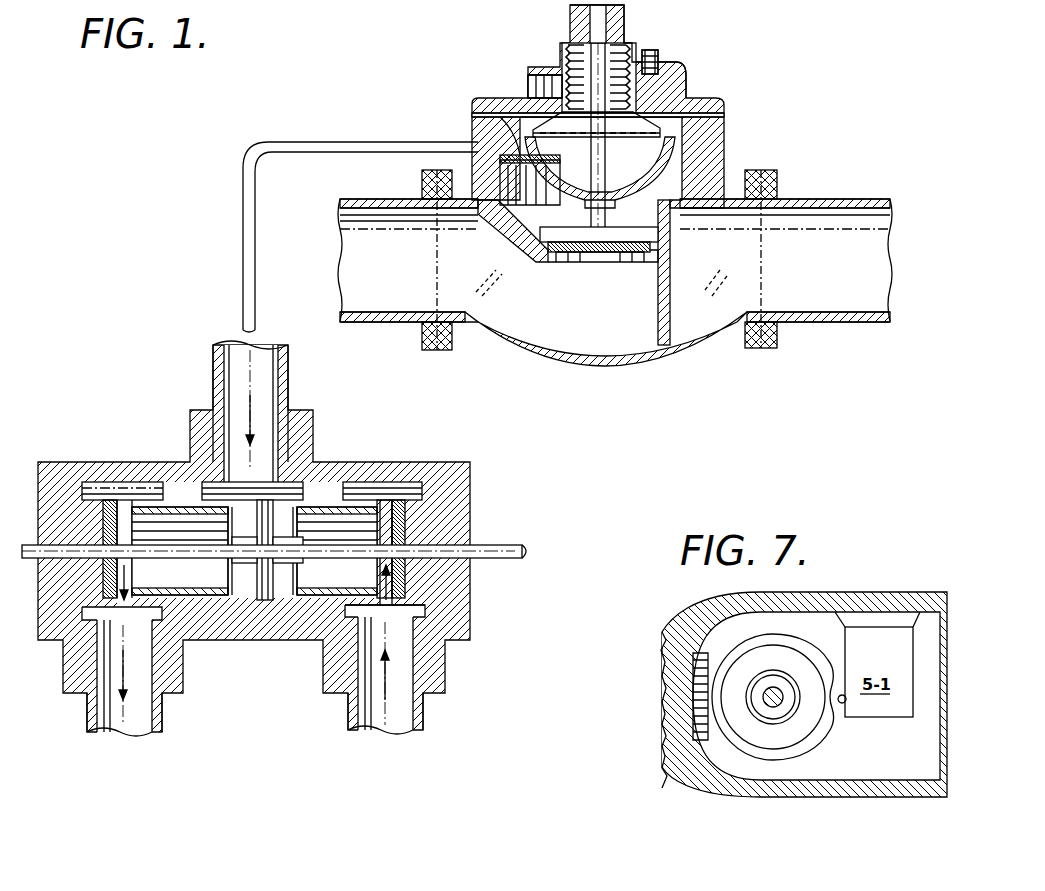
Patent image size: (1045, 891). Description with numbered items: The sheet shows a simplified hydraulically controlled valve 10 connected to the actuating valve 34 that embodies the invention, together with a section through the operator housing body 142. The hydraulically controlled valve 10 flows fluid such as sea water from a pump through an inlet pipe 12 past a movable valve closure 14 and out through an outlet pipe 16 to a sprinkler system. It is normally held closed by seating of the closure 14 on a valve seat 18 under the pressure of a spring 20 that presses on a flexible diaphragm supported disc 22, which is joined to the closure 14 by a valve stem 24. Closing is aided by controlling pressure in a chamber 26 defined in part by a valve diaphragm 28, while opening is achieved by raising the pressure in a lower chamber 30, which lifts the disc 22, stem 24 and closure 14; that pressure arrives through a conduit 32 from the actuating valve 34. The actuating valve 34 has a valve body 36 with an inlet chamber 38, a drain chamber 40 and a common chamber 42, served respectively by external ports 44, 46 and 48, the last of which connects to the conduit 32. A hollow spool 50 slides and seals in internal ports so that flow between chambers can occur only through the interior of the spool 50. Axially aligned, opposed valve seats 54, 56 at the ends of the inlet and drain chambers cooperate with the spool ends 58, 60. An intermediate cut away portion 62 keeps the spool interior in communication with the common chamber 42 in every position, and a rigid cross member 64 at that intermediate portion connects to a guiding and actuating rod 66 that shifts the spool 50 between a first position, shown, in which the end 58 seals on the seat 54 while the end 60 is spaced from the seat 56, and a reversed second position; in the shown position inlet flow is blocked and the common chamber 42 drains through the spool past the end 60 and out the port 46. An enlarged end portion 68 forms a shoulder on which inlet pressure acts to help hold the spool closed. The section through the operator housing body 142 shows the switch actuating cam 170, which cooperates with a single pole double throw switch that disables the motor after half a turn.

In FIG. 1, the hydraulically controlled valve 10 is at (662, 378).
In FIG. 1, the inlet pipe 12 is at (820, 199).
In FIG. 1, the movable valve closure 14 is at (660, 236).
In FIG. 1, the outlet pipe 16 is at (373, 199).
In FIG. 1, the valve seat 18 is at (545, 266).
In FIG. 1, the spring 20 is at (628, 48).
In FIG. 1, the flexible diaphragm supported disc 22 is at (672, 112).
In FIG. 1, the valve stem 24 is at (590, 214).
In FIG. 1, the chamber 26 is at (538, 80).
In FIG. 1, the valve diaphragm 28 is at (520, 116).
In FIG. 1, the lower chamber 30 is at (636, 158).
In FIG. 1, the conduit 32 is at (286, 142).
In FIG. 1, the actuating valve 34 is at (160, 440).
In FIG. 1, the valve body 36 is at (350, 482).
In FIG. 1, the inlet chamber 38 is at (405, 482).
In FIG. 1, the drain chamber 40 is at (122, 482).
In FIG. 1, the common chamber 42 is at (300, 482).
In FIG. 1, the external port 44 is at (392, 722).
In FIG. 1, the external port 46 is at (120, 732).
In FIG. 1, the external port 48 is at (232, 400).
In FIG. 1, the hollow spool 50 is at (252, 600).
In FIG. 1, the valve seat 54 is at (398, 528).
In FIG. 1, the valve seat 56 is at (100, 582).
In FIG. 1, the spool end 58 is at (378, 592).
In FIG. 1, the spool end 60 is at (140, 588).
In FIG. 1, the cut away portion 62 is at (245, 598).
In FIG. 1, the right collar 64 is at (272, 596).
In FIG. 1, the guiding and actuating rod 66 is at (496, 545).
In FIG. 1, the end portion 68 is at (372, 606).
In FIG. 7, the operator housing body 142 is at (722, 788).
In FIG. 7, the switch actuating cam 170 is at (795, 740).